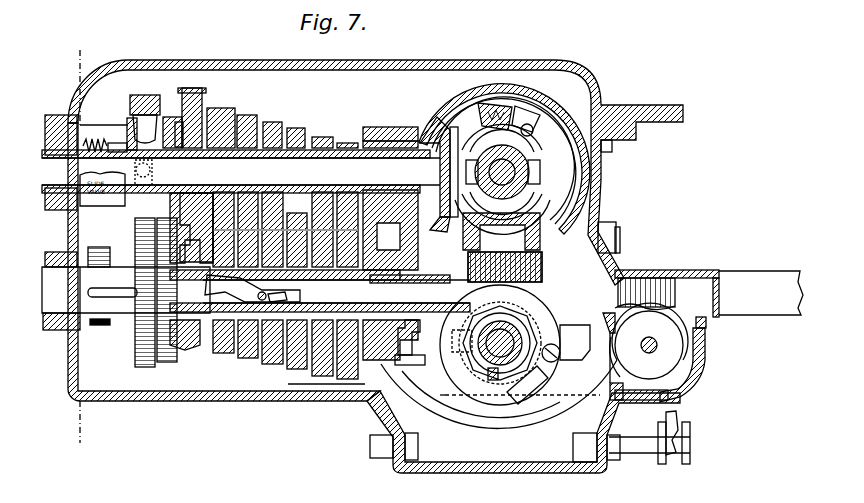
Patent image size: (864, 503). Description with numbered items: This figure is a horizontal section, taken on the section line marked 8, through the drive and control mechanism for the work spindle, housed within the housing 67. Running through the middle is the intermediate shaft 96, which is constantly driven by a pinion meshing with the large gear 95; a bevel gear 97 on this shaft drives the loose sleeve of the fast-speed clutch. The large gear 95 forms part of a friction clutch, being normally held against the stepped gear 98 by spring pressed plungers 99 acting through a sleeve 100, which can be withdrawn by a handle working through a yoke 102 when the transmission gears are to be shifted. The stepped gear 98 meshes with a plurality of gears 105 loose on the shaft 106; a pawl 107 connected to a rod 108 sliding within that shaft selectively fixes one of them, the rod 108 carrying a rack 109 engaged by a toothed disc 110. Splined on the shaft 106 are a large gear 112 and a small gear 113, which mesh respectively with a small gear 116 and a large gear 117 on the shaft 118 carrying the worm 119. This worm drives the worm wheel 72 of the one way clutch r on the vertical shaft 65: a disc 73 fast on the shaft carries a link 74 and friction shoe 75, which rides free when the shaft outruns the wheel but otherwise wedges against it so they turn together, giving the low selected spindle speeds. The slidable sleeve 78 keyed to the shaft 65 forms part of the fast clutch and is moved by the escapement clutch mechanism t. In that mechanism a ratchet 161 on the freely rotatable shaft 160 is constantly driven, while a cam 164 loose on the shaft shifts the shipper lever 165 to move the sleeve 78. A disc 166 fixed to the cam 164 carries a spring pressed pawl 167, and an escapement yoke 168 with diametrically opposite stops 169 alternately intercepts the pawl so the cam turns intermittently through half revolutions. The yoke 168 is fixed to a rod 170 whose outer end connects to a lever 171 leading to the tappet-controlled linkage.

The section line 8- 8 is at (102, 248).
The vertical shaft 65 is at (497, 185).
The housing 67 is at (342, 401).
The worm wheel 72 is at (600, 168).
The disc 73 is at (600, 190).
The link 74 is at (603, 145).
The friction shoe 75 is at (543, 120).
The slidable sleeve 78 is at (487, 150).
The large gear 95 is at (203, 97).
The intermediate shaft 96 is at (320, 168).
The bevel gear 97 is at (446, 113).
The stepped gear 98 is at (275, 124).
The spring pressed plungers 99 is at (127, 140).
The sleeve 100 is at (156, 140).
The yoke 102 is at (140, 93).
The gears 105 is at (288, 388).
The shaft 106 is at (78, 330).
The pawl 107 is at (222, 350).
The rod 108 is at (405, 272).
The rack 109 is at (650, 280).
The toothed disc 110 is at (680, 347).
The large gear 112 is at (135, 357).
The small gear 113 is at (127, 316).
The small gear 116 is at (98, 247).
The large gear 117 is at (163, 363).
The shaft 118 is at (440, 263).
The worm 119 is at (512, 250).
The freely rotatable shaft 160 is at (452, 395).
The ratchet 161 is at (492, 382).
The cam 164 is at (507, 378).
The shipper lever 165 is at (475, 285).
The disc 166 is at (468, 393).
The spring pressed pawl 167 is at (560, 372).
The escapement yoke 168 is at (478, 450).
The stops 169 is at (412, 340).
The rod 170 is at (645, 450).
The lever 171 is at (672, 418).
The one way clutch r is at (538, 112).
The escapement clutch mechanism t is at (464, 410).